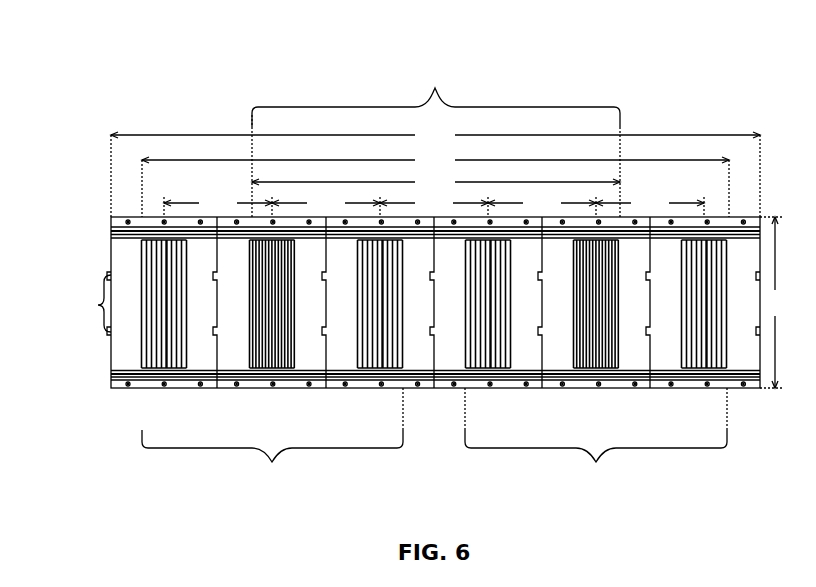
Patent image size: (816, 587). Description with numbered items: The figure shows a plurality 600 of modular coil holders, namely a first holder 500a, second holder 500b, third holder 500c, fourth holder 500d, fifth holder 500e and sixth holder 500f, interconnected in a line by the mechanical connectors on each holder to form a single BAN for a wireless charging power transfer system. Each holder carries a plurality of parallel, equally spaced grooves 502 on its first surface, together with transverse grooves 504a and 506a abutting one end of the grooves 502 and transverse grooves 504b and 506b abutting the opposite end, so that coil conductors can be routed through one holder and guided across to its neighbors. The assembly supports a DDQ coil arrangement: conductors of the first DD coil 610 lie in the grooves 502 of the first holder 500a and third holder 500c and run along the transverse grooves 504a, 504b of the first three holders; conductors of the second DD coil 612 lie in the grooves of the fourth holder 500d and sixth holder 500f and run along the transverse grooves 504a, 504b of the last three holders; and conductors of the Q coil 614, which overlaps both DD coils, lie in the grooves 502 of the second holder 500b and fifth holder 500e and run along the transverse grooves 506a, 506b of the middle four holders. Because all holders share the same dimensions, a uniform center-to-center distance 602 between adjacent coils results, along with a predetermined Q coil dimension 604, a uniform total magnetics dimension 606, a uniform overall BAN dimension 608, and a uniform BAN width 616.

The plurality of modular holders 600 is at (130, 45).
The plurality of grooves 502 is at (140, 390).
The first transverse groove 504a is at (111, 370).
The second transverse groove 504b is at (111, 241).
The first transverse groove 506a is at (111, 382).
The second transverse groove 506b is at (111, 231).
The first holder 500a is at (208, 390).
The second holder 500b is at (291, 390).
The third holder 500c is at (399, 392).
The fourth holder 500d is at (533, 392).
The fifth holder 500e is at (612, 392).
The sixth holder 500f is at (720, 390).
The center-to-center distance 602 is at (434, 204).
The Q coil dimension 604 is at (436, 166).
The total magnetics dimension 606 is at (435, 182).
The overall BAN dimension 608 is at (435, 170).
The first DD coil 610 is at (272, 453).
The second DD coil 612 is at (596, 453).
The Q coil 614 is at (436, 80).
The BAN width 616 is at (780, 302).